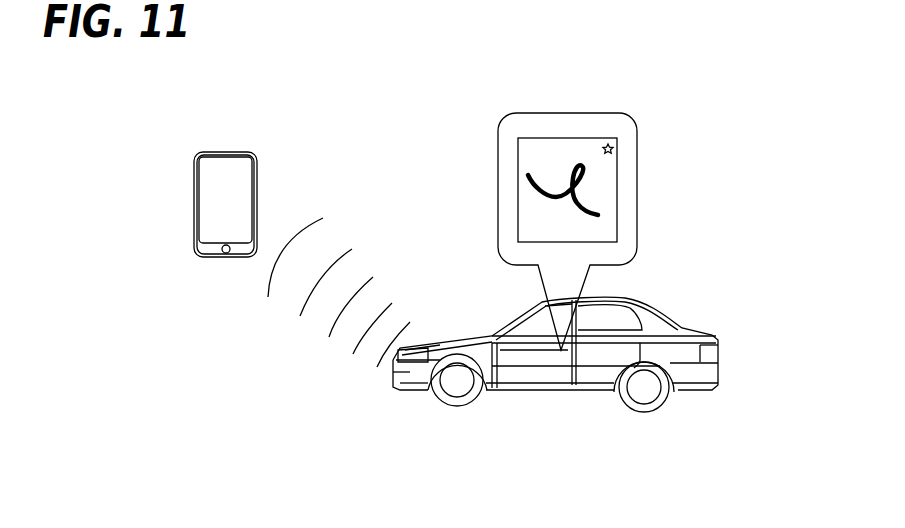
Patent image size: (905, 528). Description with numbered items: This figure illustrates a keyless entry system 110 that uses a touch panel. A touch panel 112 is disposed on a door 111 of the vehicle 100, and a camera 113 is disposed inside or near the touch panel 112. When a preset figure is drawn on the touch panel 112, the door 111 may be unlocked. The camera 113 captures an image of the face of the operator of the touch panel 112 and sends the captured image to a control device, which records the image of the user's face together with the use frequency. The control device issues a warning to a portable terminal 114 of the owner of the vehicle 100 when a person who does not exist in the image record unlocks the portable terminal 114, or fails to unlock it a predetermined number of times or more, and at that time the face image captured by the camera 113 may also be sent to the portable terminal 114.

The vehicle 100 is at (656, 305).
The keyless entry system 110 is at (354, 123).
The door 111 is at (520, 358).
The touch panel 112 is at (552, 138).
The camera 113 is at (612, 138).
The portable terminal 114 is at (194, 178).